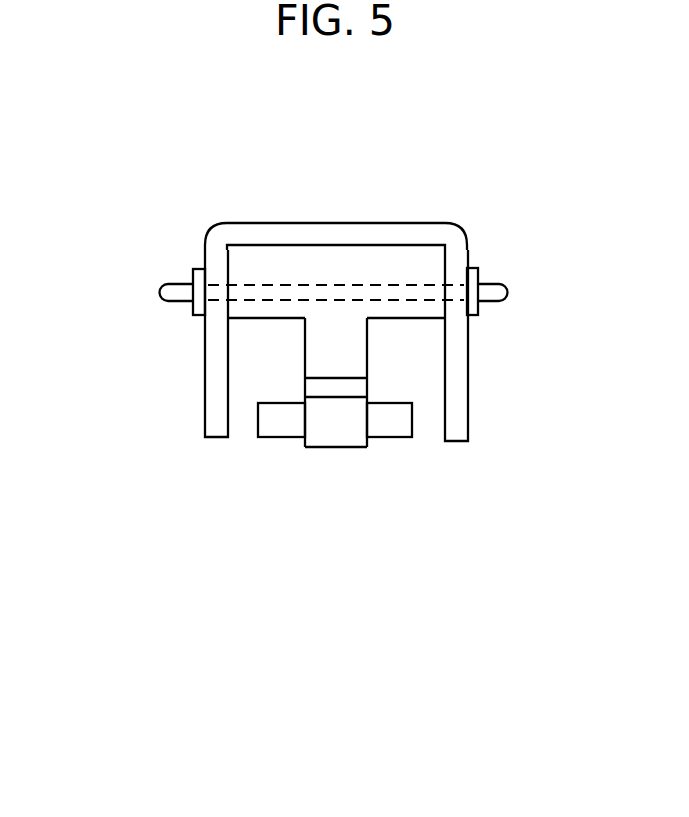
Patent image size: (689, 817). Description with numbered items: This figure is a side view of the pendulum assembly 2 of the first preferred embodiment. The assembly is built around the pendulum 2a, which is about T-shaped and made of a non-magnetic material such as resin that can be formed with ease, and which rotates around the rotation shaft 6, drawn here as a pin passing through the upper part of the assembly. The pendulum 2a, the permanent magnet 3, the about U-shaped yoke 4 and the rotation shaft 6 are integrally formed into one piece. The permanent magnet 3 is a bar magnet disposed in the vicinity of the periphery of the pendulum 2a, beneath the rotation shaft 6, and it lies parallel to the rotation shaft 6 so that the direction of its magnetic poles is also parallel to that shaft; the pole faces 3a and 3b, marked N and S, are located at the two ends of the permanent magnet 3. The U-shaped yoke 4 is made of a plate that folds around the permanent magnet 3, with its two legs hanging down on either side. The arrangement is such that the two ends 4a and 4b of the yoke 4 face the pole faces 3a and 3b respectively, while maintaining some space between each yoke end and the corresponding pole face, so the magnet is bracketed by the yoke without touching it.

The pendulum assembly 2 is at (425, 218).
The pendulum 2a is at (272, 268).
The U-shaped yoke 4 is at (327, 235).
The end of yoke 4a is at (212, 408).
The end of yoke 4b is at (455, 413).
The rotation shaft 6 is at (503, 290).
The permanent magnet 3 is at (293, 425).
The pole face 3a is at (258, 423).
The pole face 3b is at (412, 430).